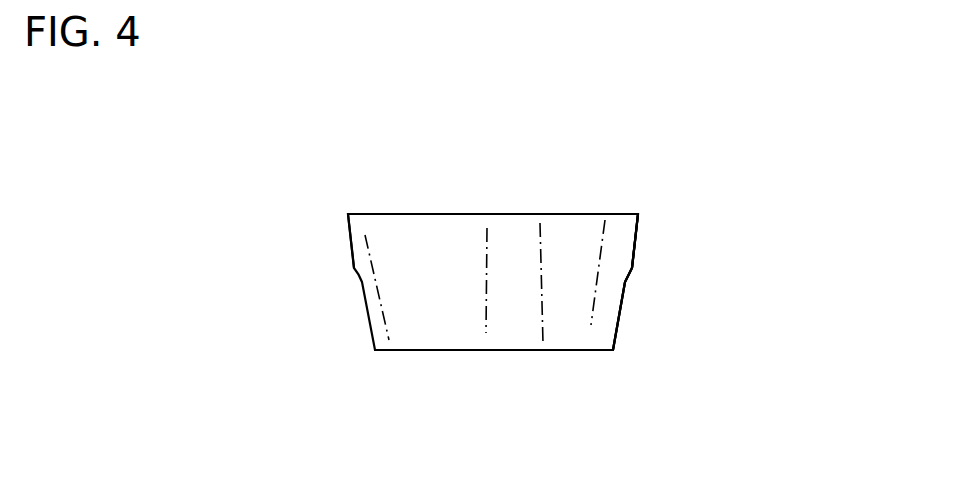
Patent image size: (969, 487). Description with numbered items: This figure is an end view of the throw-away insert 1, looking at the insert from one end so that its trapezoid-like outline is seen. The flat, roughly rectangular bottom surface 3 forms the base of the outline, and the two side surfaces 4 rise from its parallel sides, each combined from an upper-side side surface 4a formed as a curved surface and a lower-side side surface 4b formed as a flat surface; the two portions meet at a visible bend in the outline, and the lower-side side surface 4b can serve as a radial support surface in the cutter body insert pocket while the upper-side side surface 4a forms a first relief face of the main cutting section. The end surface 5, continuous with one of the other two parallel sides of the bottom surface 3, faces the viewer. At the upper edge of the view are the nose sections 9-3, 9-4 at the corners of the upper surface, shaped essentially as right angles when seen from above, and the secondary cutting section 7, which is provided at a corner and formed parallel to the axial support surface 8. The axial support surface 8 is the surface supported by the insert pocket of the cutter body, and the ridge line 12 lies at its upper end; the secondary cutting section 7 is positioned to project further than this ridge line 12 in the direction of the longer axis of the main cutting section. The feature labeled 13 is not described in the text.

The throw-away insert 1 is at (586, 176).
The bottom surface 3 is at (410, 350).
The side surface 4 is at (720, 232).
The upper-side side surface 4a is at (636, 246).
The lower-side side surface 4b is at (620, 325).
The end surface 5 is at (572, 325).
The secondary cutting section 7 is at (594, 213).
The axial support surface 8 is at (449, 330).
The nose section 9-3 is at (646, 208).
The nose section 9-4 is at (350, 211).
The ridge line 12 is at (429, 212).
The boundary line 13 is at (521, 212).